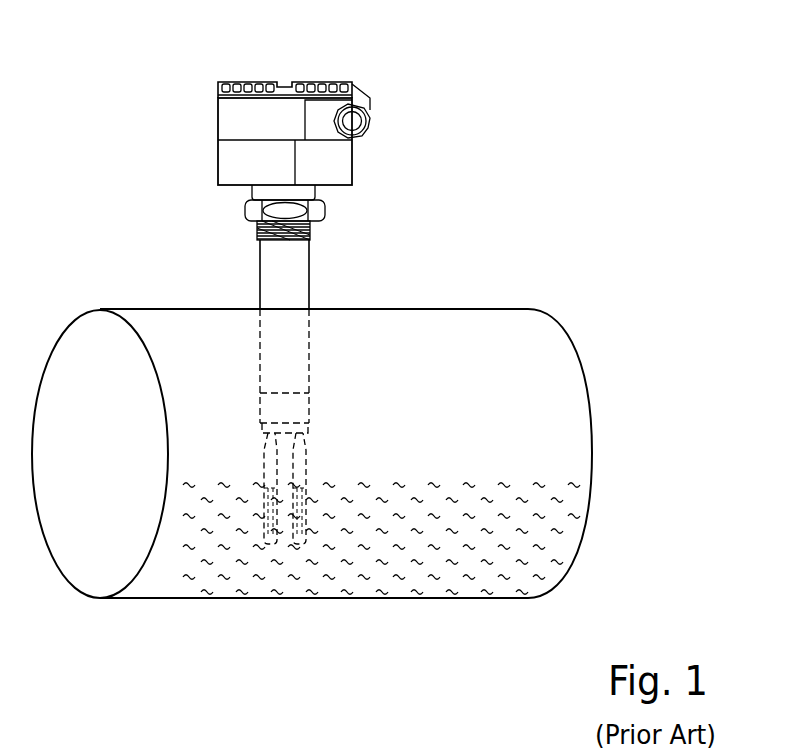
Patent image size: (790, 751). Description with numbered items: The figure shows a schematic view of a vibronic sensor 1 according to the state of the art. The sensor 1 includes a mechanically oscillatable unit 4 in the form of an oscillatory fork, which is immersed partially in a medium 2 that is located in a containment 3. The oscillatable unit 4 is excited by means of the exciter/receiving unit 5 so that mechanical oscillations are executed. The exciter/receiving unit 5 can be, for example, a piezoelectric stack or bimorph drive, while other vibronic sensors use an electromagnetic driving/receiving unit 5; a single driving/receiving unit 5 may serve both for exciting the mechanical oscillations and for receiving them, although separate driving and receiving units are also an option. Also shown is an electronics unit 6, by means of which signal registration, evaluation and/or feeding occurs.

The vibronic sensor 1 is at (276, 340).
The medium 2 is at (434, 545).
The containment 3 is at (551, 588).
The mechanically oscillatable unit 4 is at (254, 507).
The exciter/receiving unit 5 is at (250, 405).
The electronics unit 6 is at (350, 163).